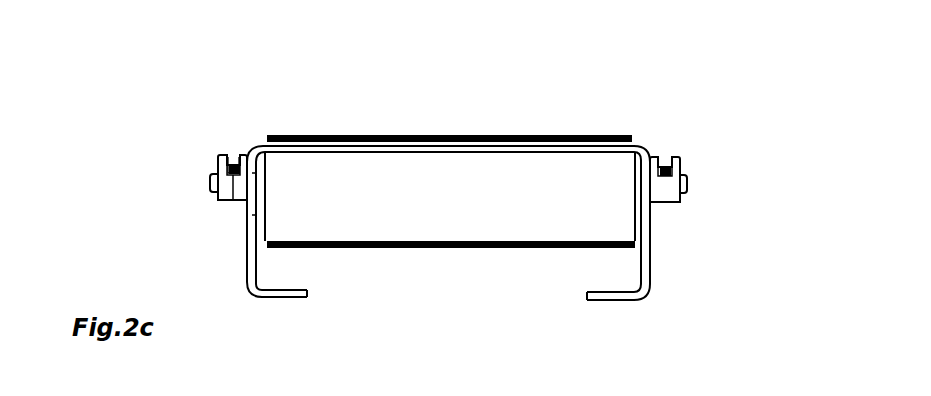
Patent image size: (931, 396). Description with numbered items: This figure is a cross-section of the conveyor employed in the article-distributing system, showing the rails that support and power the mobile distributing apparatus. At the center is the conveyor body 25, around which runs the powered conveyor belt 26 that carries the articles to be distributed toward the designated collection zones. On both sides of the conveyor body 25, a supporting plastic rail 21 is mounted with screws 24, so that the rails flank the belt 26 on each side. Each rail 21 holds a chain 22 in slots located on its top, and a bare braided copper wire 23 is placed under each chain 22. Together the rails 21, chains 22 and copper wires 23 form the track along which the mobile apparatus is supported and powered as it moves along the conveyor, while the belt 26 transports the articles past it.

The supporting plastic rail 21 is at (222, 155).
The chain 22 is at (230, 153).
The bare braided copper wire 23 is at (237, 168).
The screw 24 is at (212, 185).
The conveyor body 25 is at (652, 233).
The conveyor belt 26 is at (497, 137).